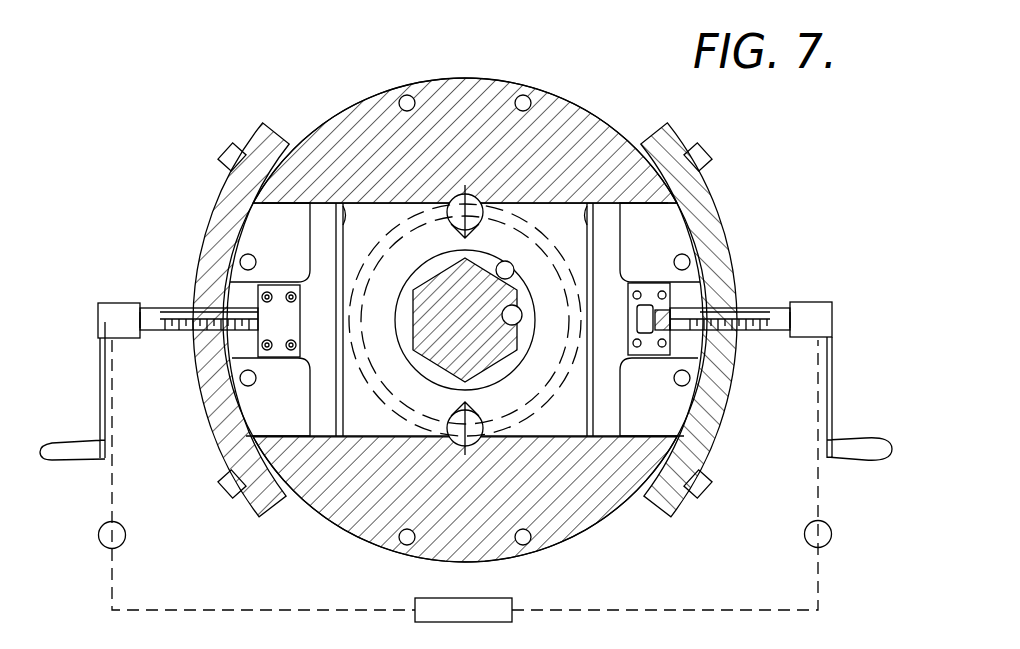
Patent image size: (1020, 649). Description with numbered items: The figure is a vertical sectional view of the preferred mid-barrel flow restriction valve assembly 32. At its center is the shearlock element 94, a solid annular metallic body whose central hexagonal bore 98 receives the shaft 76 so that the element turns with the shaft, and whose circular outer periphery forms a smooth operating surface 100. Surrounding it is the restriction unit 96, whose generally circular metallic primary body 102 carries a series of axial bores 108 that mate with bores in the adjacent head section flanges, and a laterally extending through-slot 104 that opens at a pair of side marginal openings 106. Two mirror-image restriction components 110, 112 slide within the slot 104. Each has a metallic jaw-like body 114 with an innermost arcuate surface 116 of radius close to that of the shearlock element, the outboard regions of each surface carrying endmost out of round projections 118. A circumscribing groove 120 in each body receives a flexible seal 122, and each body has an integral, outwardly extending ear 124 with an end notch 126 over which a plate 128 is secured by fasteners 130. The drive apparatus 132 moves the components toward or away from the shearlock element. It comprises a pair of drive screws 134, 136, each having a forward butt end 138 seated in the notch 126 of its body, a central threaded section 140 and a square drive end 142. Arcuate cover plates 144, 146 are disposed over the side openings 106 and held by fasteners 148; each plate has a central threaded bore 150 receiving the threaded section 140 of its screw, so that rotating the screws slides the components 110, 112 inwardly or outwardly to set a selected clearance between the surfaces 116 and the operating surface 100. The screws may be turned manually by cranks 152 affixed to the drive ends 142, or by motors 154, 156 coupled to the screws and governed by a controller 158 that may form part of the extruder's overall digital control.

The mid-barrel flow restriction valve assembly 32 is at (346, 56).
The shaft 76 is at (425, 350).
The shearlock element 94 is at (397, 283).
The restriction unit 96 is at (566, 88).
The central hexagonal bore 98 is at (522, 316).
The operating surface 100 is at (535, 296).
The primary body 102 is at (482, 93).
The through-slot 104 is at (268, 436).
The side marginal openings 106 is at (268, 218).
The axial bores 108 is at (407, 95).
The restriction component 110 is at (290, 405).
The restriction component 112 is at (640, 412).
The jaw-like body 114 is at (373, 434).
The arcuate surface 116 is at (543, 268).
The out of round projections 118 is at (482, 207).
The circumscribing groove 120 is at (343, 218).
The flexible seal 122 is at (340, 250).
The ear 124 is at (665, 278).
The end notch 126 is at (668, 292).
The plate 128 is at (281, 352).
The fasteners 130 is at (255, 295).
The drive apparatus 132 is at (824, 242).
The drive screw 134 is at (175, 338).
The drive screw 136 is at (800, 333).
The forward butt end 138 is at (648, 335).
The central threaded section 140 is at (175, 310).
The square drive end 142 is at (117, 308).
The arcuate cover plate 144 is at (262, 140).
The arcuate cover plate 146 is at (668, 145).
The fasteners 148 is at (228, 150).
The threaded bore 150 is at (190, 308).
The cranks 152 is at (50, 445).
The motor 154 is at (99, 540).
The motor 156 is at (831, 540).
The controller 158 is at (415, 605).